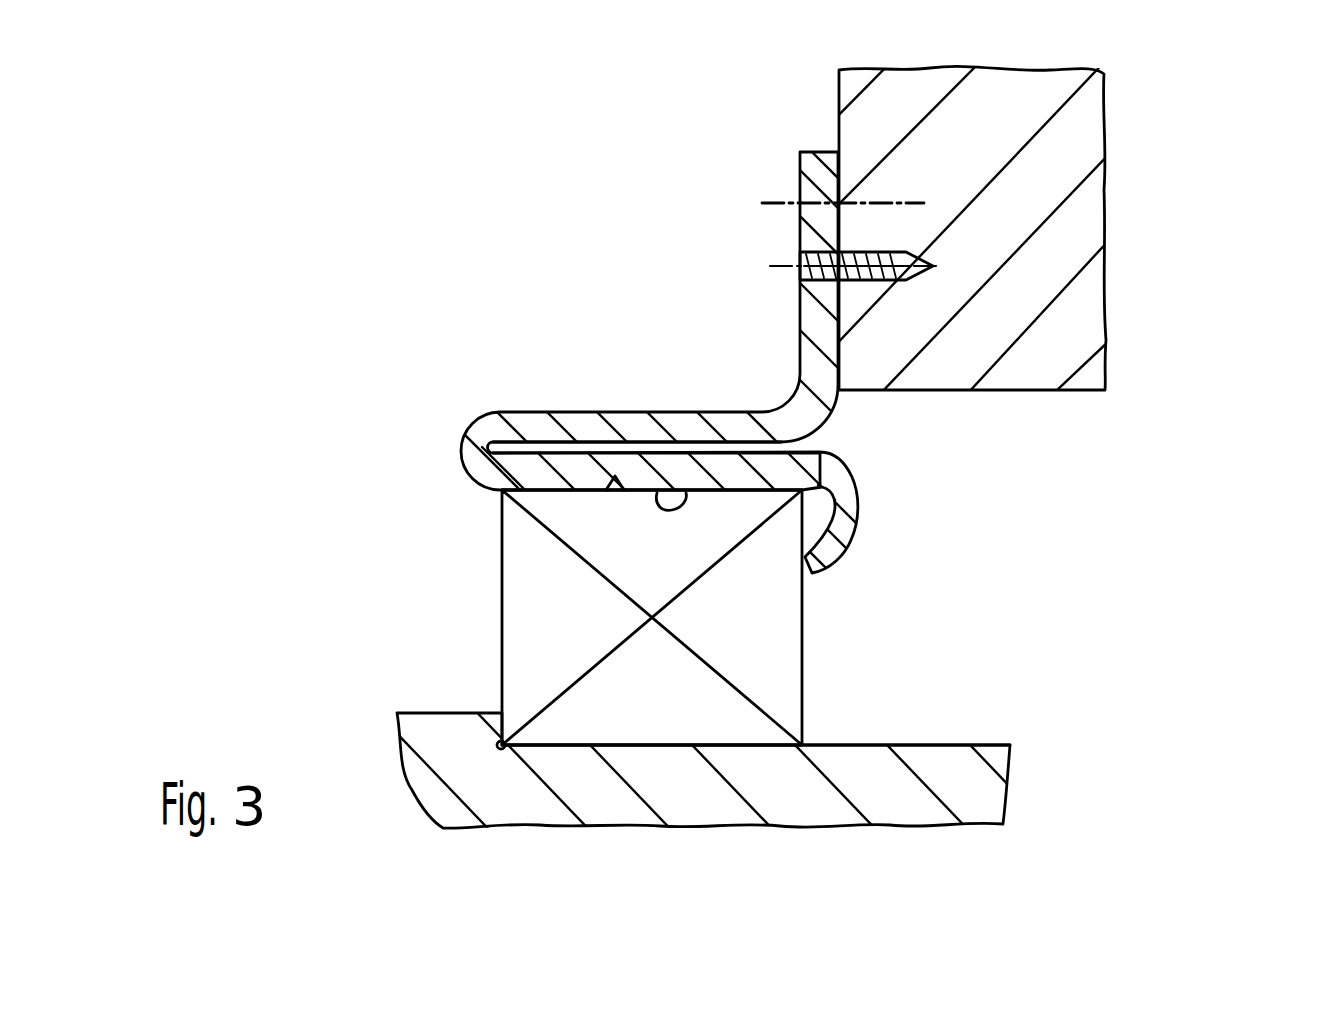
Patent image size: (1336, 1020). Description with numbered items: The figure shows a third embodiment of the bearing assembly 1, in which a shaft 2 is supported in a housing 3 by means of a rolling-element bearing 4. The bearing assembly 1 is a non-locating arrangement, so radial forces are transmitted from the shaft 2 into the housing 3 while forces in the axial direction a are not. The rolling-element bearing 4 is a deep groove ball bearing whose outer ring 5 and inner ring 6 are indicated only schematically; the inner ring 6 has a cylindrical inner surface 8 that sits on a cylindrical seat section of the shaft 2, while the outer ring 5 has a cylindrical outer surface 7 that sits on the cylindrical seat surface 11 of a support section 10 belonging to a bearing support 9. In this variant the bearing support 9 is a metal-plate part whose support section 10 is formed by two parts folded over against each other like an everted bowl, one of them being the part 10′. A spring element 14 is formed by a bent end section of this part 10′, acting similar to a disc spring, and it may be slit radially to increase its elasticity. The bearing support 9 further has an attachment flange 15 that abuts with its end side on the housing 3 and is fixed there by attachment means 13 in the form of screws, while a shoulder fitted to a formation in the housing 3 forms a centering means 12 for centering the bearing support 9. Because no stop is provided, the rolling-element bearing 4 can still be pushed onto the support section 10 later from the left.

The bearing assembly 1 is at (525, 183).
The shaft 2 is at (963, 802).
The housing 3 is at (1078, 158).
The rolling-element bearing 4 is at (542, 595).
The outer ring 5 is at (570, 497).
The inner ring 6 is at (553, 715).
The cylindrical outer surface 7 is at (612, 487).
The cylindrical inner surface 8 is at (645, 750).
The bearing support 9 is at (805, 422).
The support section 10 is at (639, 476).
The first folded part of support section 10′ is at (754, 470).
The cylindrical seat surface 11 is at (686, 493).
The centering means 12 is at (897, 281).
The attachment means 13 is at (777, 200).
The spring element 14 is at (837, 547).
The attachment flange 15 is at (813, 167).
The axial direction a is at (1310, 748).